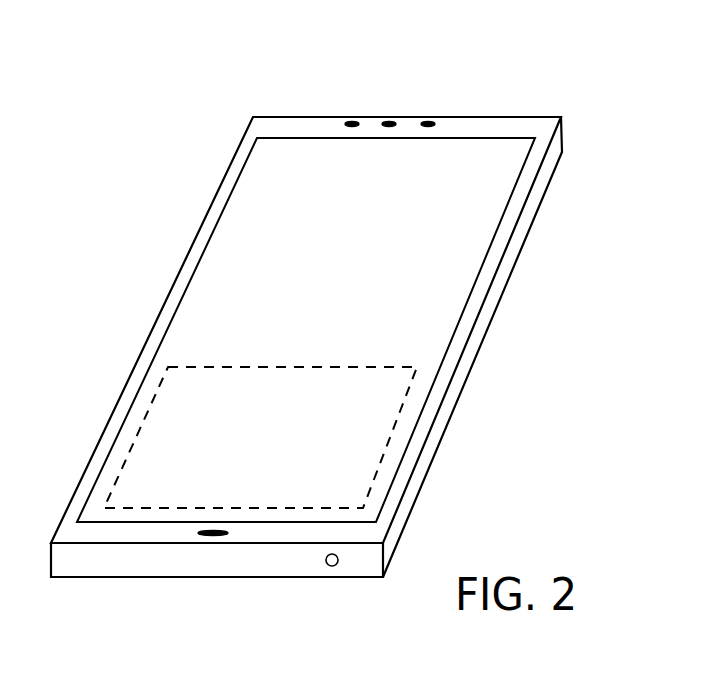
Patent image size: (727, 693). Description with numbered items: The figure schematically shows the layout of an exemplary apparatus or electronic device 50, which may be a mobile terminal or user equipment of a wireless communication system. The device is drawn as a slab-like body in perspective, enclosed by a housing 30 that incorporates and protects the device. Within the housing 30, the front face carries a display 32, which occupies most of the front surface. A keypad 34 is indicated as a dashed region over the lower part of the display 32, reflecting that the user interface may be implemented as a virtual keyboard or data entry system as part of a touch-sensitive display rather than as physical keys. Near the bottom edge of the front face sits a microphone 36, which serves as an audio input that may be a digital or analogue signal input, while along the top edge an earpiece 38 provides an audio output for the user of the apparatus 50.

The electronic device 50 is at (591, 80).
The housing 30 is at (272, 115).
The display 32 is at (453, 253).
The keypad 34 is at (370, 457).
The microphone 36 is at (218, 535).
The earpiece 38 is at (387, 123).